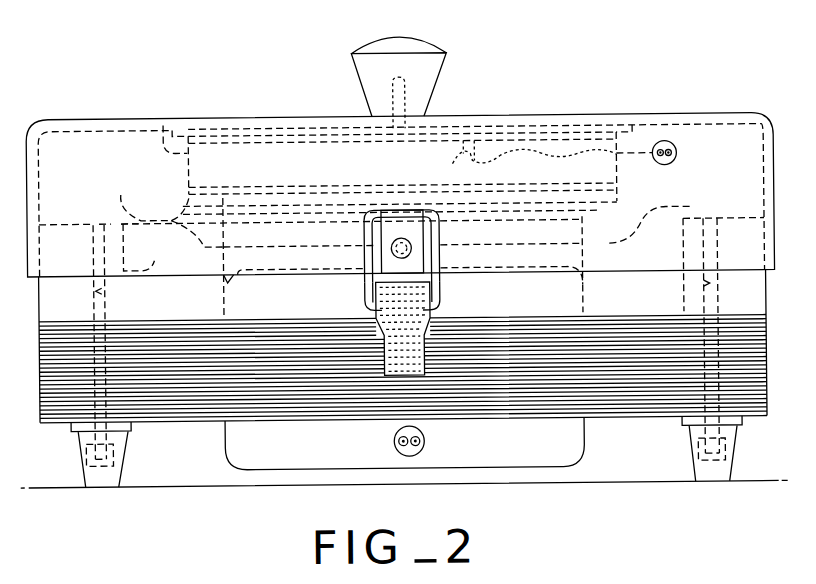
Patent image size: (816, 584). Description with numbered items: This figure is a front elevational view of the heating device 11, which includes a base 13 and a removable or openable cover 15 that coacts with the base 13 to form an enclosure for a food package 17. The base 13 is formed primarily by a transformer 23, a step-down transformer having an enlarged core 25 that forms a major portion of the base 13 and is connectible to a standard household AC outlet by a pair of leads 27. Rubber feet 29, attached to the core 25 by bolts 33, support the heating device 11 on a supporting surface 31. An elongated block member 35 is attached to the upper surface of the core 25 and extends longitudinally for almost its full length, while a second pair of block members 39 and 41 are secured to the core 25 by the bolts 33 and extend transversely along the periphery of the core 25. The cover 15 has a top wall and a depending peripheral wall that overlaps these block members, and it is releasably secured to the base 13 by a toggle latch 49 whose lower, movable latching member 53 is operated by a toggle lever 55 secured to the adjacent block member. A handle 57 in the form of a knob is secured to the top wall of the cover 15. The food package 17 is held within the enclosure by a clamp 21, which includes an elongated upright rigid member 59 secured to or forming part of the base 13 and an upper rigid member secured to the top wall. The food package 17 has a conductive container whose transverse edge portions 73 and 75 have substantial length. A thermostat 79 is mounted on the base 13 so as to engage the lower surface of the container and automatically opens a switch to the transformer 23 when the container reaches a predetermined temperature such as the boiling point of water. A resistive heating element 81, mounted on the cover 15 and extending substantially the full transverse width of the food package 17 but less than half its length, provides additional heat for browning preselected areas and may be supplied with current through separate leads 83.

The heating device 11 is at (622, 104).
The base 13 is at (657, 431).
The cover 15 is at (87, 118).
The food package 17 is at (646, 197).
The clamp 21 is at (163, 127).
The transformer 23 is at (270, 456).
The core 25 is at (237, 381).
The leads 27 is at (399, 457).
The feet 29 is at (120, 441).
The supporting surface 31 is at (42, 488).
The bolts 33 is at (122, 461).
The block member 35 is at (147, 247).
The block member 39 is at (83, 208).
The block member 41 is at (736, 224).
The toggle latch 49 is at (354, 289).
The movable latching member 53 is at (436, 232).
The latch keeper 55 is at (402, 374).
The handle 57 is at (421, 51).
The upright rigid member 59 is at (584, 254).
The transverse edge portion 73 is at (366, 209).
The transverse edge portion 75 is at (678, 215).
The thermostat 79 is at (352, 255).
The resistive heating element 81 is at (530, 134).
The leads 83 is at (669, 151).